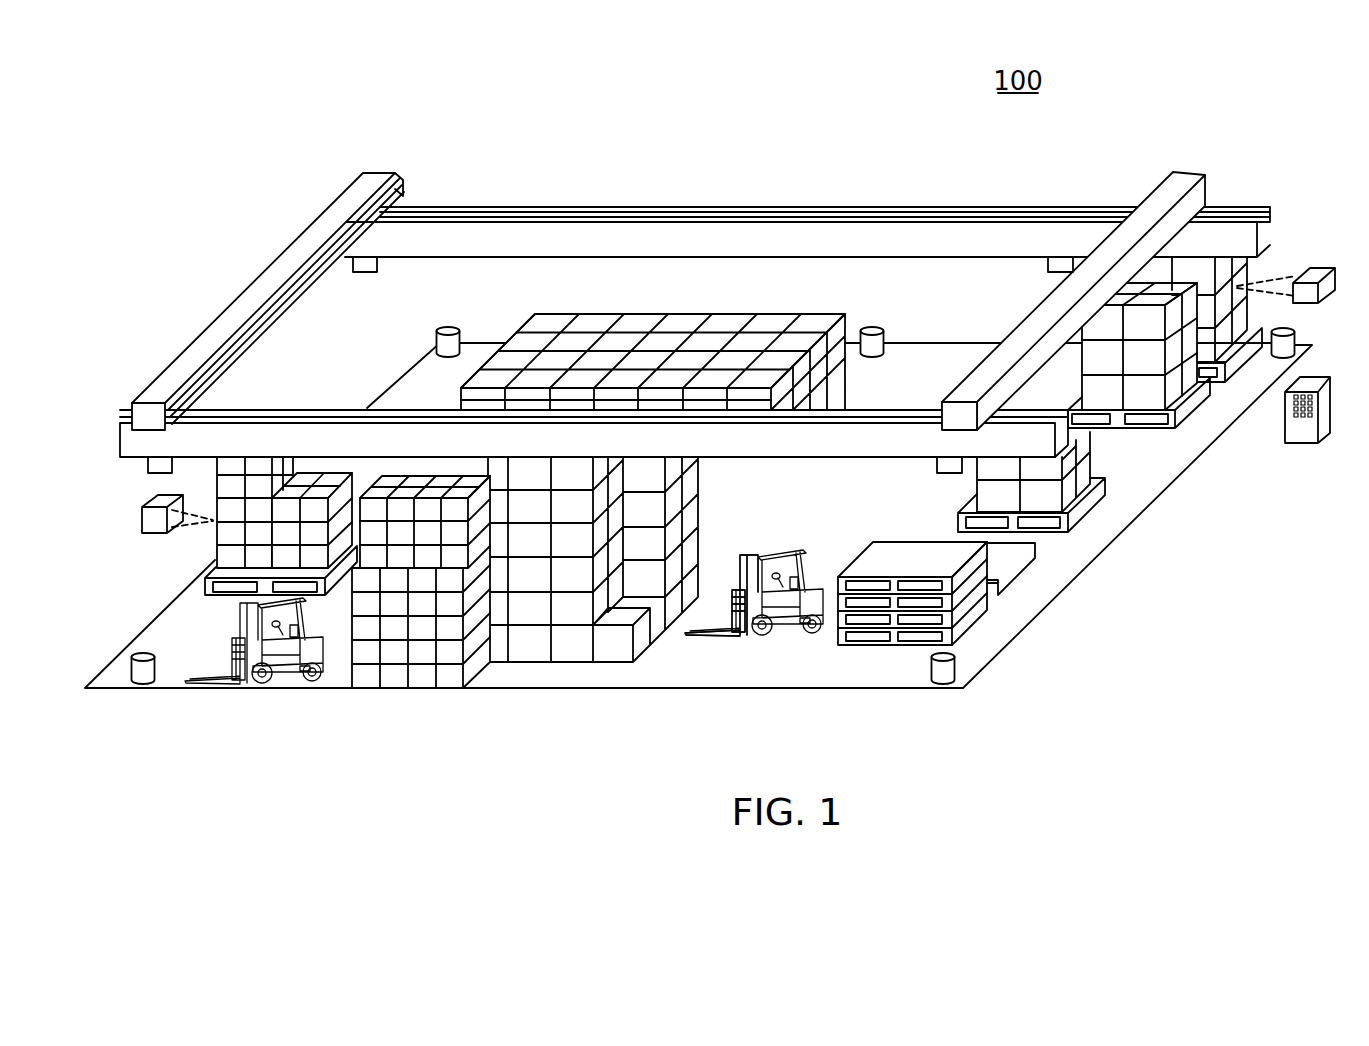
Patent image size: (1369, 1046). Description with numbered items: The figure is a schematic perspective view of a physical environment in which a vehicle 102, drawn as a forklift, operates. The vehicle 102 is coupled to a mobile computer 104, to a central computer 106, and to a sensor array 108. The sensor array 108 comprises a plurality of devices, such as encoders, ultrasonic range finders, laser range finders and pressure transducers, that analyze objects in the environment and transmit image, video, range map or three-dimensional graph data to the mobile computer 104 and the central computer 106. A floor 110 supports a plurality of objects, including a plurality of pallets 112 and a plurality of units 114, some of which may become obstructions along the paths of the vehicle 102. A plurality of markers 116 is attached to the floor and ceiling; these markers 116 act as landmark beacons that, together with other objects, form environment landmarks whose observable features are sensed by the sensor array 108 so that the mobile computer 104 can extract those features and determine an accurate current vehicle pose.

The vehicle 102 is at (289, 670).
The mobile computer 104 is at (733, 607).
The central computer 106 is at (1304, 443).
The sensor array 108 is at (743, 572).
The floor 110 is at (857, 667).
The pallets 112 is at (1088, 502).
The units 114 is at (142, 514).
The markers 116 is at (366, 273).